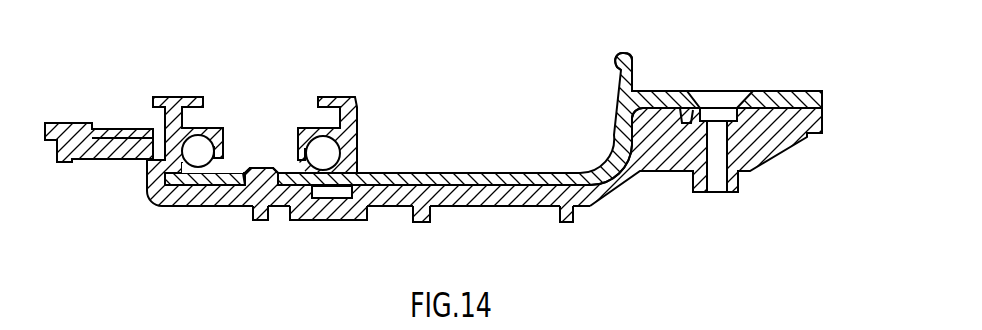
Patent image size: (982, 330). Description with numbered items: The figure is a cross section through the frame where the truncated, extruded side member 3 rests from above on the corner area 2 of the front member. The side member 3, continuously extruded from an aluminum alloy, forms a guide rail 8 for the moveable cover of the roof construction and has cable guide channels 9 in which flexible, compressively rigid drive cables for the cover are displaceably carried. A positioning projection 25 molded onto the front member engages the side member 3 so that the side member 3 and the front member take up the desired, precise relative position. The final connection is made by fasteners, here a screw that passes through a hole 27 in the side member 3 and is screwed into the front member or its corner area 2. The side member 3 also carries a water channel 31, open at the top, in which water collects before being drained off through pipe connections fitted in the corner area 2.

The corner area 2 is at (590, 200).
The side member 3 is at (639, 62).
The guide rail 8 is at (153, 120).
The cable guide channel 9 is at (325, 146).
The positioning projection 25 is at (265, 180).
The hole 27 is at (719, 104).
The water channel 31 is at (470, 173).